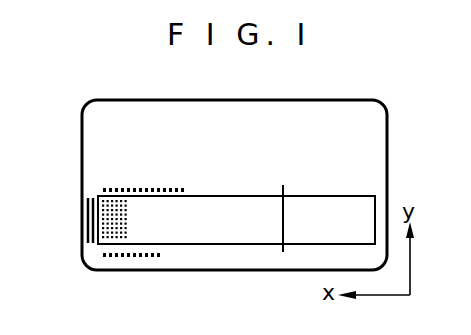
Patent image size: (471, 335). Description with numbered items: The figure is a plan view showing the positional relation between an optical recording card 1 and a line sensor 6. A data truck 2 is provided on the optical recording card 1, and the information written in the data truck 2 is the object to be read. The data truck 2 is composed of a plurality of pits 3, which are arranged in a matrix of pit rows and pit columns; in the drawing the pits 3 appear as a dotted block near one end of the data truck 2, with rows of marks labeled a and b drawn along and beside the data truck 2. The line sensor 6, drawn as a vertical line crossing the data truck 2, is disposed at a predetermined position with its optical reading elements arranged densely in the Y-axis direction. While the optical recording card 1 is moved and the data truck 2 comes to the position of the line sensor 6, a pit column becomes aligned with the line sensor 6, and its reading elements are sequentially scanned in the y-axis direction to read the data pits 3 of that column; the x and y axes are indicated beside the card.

The optical recording card 1 is at (390, 163).
The data truck 2 is at (221, 232).
The pits 3 is at (118, 228).
The line sensor 6 is at (285, 220).
The start bars a is at (90, 243).
The timing marks b is at (140, 190).